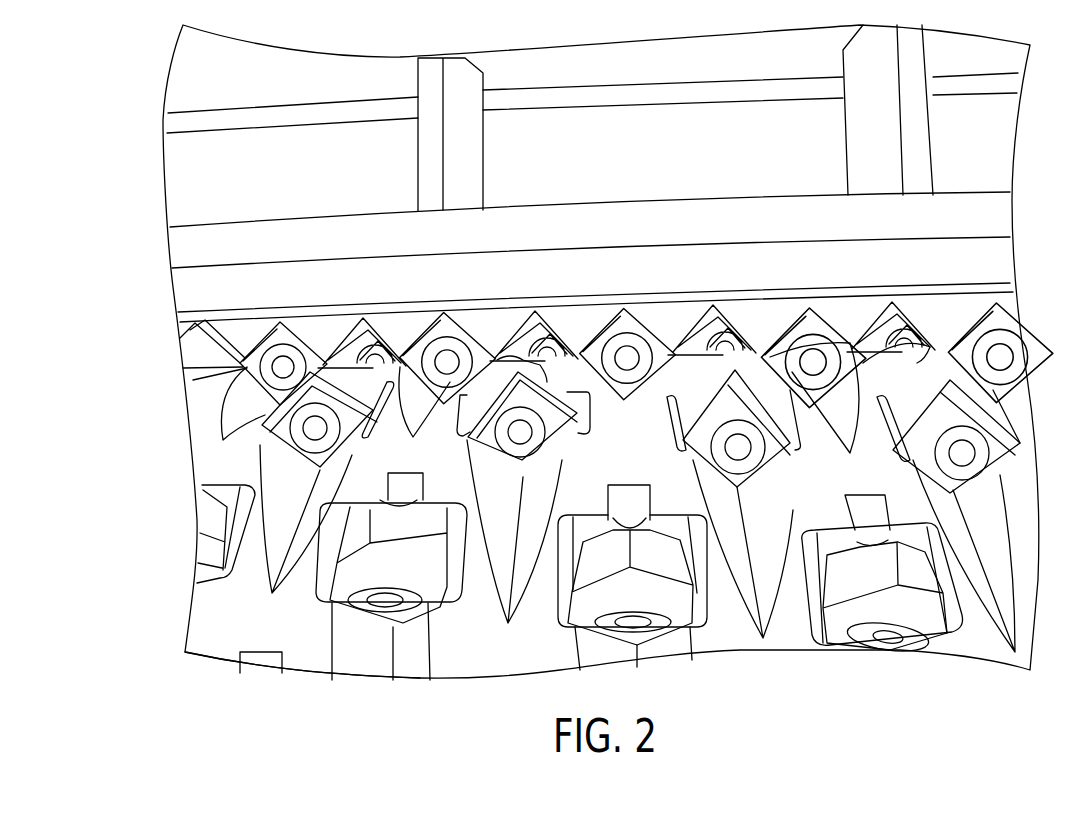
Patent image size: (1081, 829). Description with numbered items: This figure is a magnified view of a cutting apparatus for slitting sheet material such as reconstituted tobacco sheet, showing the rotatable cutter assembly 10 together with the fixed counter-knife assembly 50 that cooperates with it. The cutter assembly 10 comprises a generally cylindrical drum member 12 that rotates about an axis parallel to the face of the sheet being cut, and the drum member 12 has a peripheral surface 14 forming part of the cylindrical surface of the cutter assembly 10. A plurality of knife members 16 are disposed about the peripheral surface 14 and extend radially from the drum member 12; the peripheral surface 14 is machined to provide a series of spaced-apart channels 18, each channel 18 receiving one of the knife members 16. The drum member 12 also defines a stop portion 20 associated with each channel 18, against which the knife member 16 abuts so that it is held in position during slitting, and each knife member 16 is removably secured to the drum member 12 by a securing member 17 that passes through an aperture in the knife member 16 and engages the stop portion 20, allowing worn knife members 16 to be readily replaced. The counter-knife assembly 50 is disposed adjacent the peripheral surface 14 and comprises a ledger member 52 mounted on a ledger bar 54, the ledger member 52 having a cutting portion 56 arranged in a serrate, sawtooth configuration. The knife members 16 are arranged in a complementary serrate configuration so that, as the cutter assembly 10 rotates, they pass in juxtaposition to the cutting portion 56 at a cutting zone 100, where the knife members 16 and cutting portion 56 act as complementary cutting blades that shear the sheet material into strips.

The rotatable cutter assembly 10 is at (165, 553).
The drum member 12 is at (238, 618).
The peripheral surface 14 is at (289, 634).
The knife members 16 is at (290, 427).
The securing member 17 is at (385, 602).
The channel 18 is at (300, 478).
The stop portion 20 is at (600, 558).
The fixed counter-knife assembly 50 is at (112, 265).
The ledger member 52 is at (215, 328).
The ledger bar 54 is at (953, 170).
The cutting portion 56 is at (235, 345).
The cutting zone 100 is at (1027, 330).